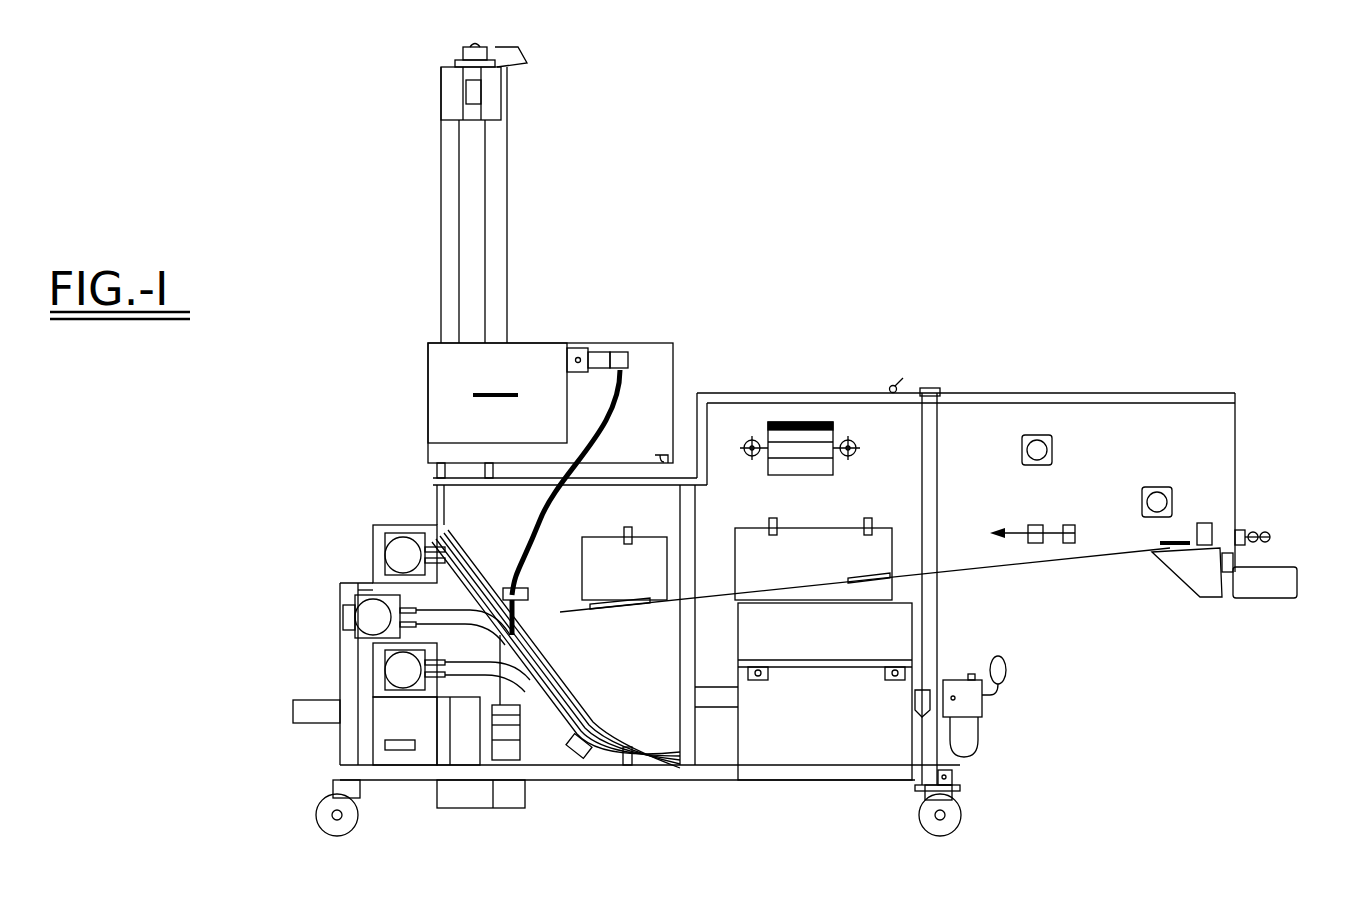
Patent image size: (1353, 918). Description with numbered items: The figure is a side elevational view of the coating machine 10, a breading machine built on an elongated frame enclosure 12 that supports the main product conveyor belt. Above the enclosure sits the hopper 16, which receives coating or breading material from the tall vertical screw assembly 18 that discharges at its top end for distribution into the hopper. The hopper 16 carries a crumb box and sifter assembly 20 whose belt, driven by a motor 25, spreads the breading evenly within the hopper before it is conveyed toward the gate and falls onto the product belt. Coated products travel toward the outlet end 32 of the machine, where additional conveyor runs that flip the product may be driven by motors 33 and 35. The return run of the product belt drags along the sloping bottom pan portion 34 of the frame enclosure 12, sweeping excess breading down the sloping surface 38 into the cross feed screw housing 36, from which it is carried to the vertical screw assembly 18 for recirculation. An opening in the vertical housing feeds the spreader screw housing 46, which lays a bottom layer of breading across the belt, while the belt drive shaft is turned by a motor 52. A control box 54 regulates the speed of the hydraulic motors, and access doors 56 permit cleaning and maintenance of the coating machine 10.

The coating machine 10 is at (814, 348).
The frame enclosure 12 is at (1009, 380).
The hopper 16 is at (665, 343).
The vertical screw assembly 18 is at (441, 217).
The crumb box and sifter assembly 20 is at (428, 405).
The motor 25 is at (614, 335).
The outlet end 32 is at (1265, 518).
The motor 33 is at (1040, 435).
The bottom pan portion 34 is at (1052, 575).
The motor 35 is at (1168, 487).
The cross feed screw housing 36 is at (373, 667).
The sloping surface 38 is at (495, 665).
The spreader screw housing 46 is at (373, 545).
The motor 52 is at (343, 607).
The control box 54 is at (815, 775).
The access doors 56 is at (772, 535).